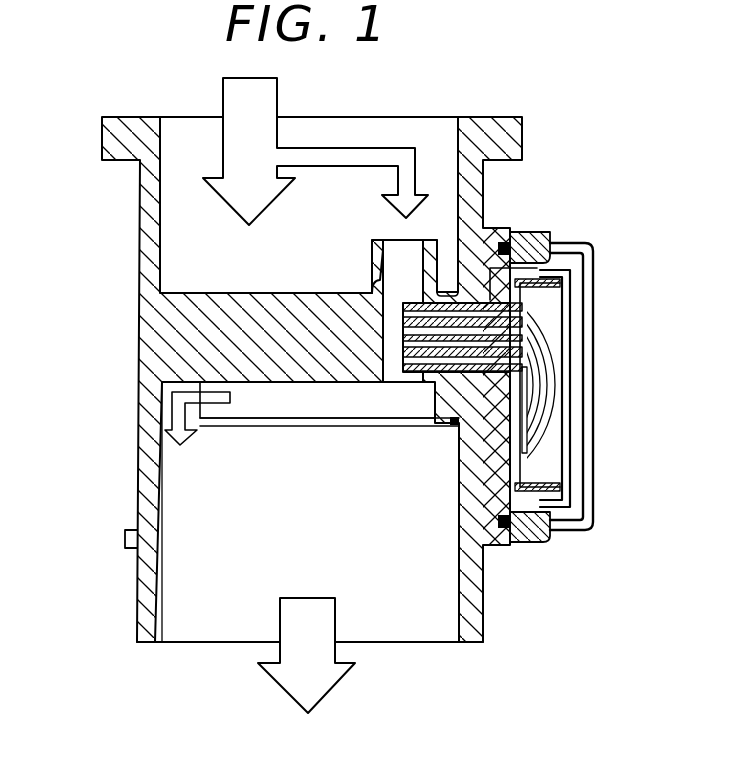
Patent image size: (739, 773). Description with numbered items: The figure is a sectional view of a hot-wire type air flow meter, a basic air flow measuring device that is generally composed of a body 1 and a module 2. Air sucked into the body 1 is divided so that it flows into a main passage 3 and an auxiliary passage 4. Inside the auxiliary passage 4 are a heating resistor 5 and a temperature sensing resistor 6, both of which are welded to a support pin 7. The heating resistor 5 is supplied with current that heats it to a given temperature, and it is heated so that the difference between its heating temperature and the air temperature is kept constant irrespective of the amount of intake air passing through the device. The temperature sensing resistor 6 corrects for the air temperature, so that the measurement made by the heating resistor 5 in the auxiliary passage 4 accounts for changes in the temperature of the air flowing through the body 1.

The body 1 is at (101, 118).
The module 2 is at (592, 316).
The main passage 3 is at (318, 195).
The auxiliary passage 4 is at (410, 257).
The heating resistor 5 is at (489, 260).
The temperature sensing resistor 6 is at (402, 312).
The support pin 7 is at (383, 307).